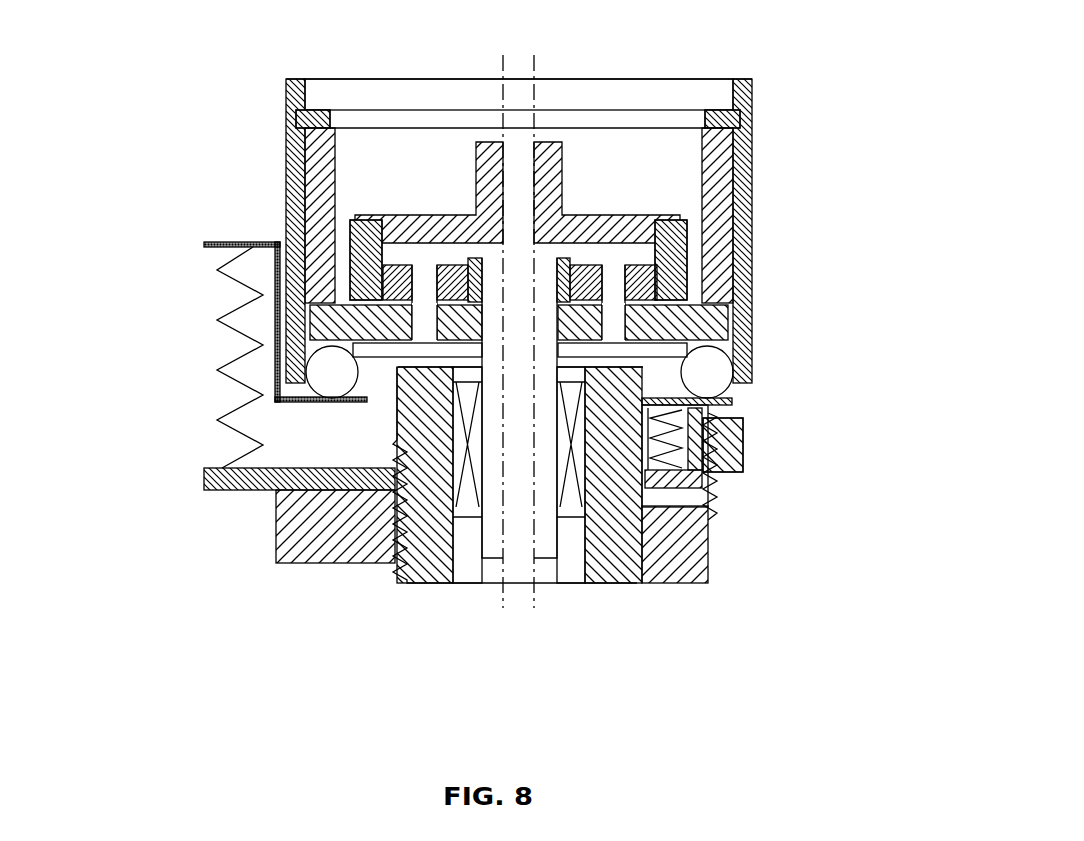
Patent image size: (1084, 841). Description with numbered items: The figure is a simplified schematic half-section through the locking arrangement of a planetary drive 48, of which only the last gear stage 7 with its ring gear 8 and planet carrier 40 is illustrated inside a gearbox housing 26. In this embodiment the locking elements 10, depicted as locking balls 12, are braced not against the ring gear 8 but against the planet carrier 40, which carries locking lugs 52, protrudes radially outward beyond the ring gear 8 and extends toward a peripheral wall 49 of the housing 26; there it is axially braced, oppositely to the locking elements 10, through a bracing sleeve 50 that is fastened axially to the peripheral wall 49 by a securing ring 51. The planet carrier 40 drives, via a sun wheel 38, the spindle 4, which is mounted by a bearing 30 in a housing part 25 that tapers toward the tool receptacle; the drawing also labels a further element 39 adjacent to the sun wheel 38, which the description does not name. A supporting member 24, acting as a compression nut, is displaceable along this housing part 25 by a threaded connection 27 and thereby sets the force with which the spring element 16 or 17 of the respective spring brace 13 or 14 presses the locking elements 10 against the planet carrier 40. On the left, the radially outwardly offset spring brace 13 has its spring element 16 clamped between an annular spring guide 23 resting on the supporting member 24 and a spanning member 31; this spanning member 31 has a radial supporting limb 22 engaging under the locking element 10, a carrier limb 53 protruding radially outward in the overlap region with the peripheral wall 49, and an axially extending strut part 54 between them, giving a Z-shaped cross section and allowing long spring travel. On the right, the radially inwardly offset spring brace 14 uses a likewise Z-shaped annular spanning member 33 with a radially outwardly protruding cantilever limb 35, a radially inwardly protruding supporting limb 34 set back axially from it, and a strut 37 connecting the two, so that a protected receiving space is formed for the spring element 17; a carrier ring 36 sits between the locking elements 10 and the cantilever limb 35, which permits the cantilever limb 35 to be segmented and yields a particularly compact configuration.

The spindle 4 is at (492, 547).
The last gear stage 7 is at (517, 200).
The ring gear 8 is at (668, 232).
The locking elements 10 is at (519, 406).
The locking balls 12 is at (340, 382).
The spring brace 13 is at (233, 304).
The spring brace 14 is at (757, 530).
The spring element 16 is at (233, 304).
The spring element 17 is at (710, 477).
The supporting limb 22 is at (323, 405).
The annular spring guide 23 is at (236, 475).
The supporting member 24 is at (322, 535).
The housing part 25 is at (432, 542).
The gearbox housing 26 is at (581, 226).
The threaded connection 27 is at (395, 530).
The bearing 30 is at (468, 510).
The spanning member 31 is at (214, 236).
The spanning member 33 is at (733, 518).
The supporting limb 34 is at (670, 483).
The cantilever limb 35 is at (735, 410).
The carrier ring 36 is at (733, 402).
The strut 37 is at (742, 463).
The sun wheel 38 is at (482, 260).
The plate portion 39 is at (398, 267).
The planet carrier 40 is at (705, 325).
The planetary drive 48 is at (592, 100).
The peripheral wall 49 is at (740, 160).
The bracing sleeve 50 is at (317, 150).
The securing ring 51 is at (316, 112).
The locking lugs 52 is at (572, 403).
The carrier limb 53 is at (250, 240).
The strut part 54 is at (277, 313).